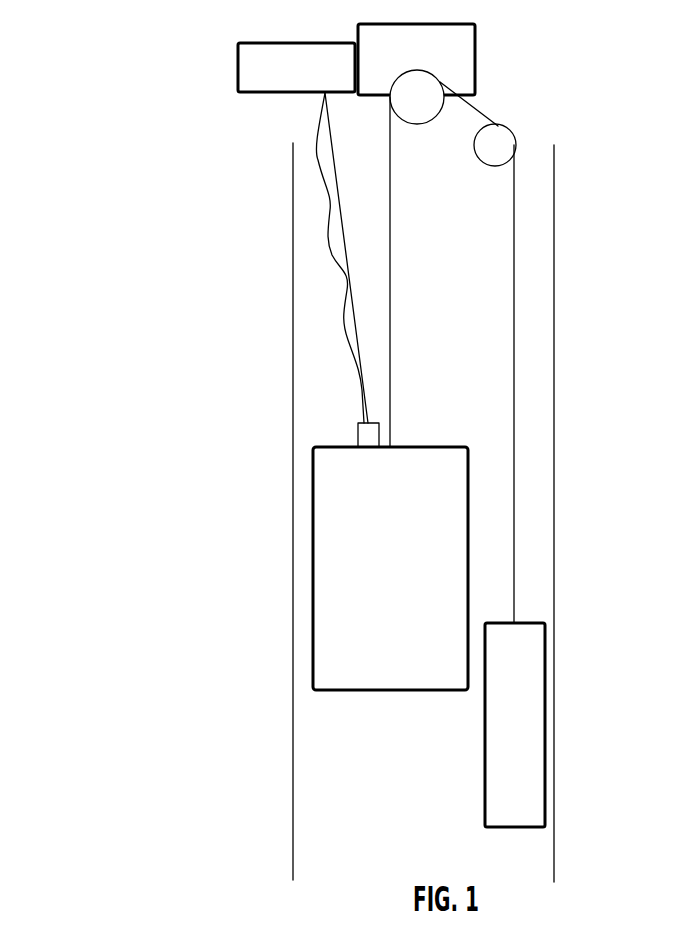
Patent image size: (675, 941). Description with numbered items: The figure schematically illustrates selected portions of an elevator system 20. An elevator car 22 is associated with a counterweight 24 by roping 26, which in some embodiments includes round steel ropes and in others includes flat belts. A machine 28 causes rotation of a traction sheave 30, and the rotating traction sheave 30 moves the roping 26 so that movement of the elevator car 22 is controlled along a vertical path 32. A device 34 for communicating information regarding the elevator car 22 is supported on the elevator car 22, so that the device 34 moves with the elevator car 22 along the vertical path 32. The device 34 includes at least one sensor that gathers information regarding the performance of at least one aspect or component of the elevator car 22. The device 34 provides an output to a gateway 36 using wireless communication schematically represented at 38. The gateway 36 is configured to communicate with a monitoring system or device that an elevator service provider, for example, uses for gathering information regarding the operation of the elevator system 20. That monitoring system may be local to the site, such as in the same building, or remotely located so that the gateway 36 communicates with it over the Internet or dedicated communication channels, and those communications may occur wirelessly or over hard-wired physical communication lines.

The elevator system 20 is at (128, 213).
The elevator car 22 is at (379, 556).
The counterweight 24 is at (546, 692).
The roping 26 is at (514, 201).
The machine 28 is at (476, 45).
The traction sheave 30 is at (448, 92).
The vertical path 32 is at (554, 268).
The device 34 is at (361, 437).
The gateway 36 is at (247, 43).
The wireless communication 38 is at (326, 143).